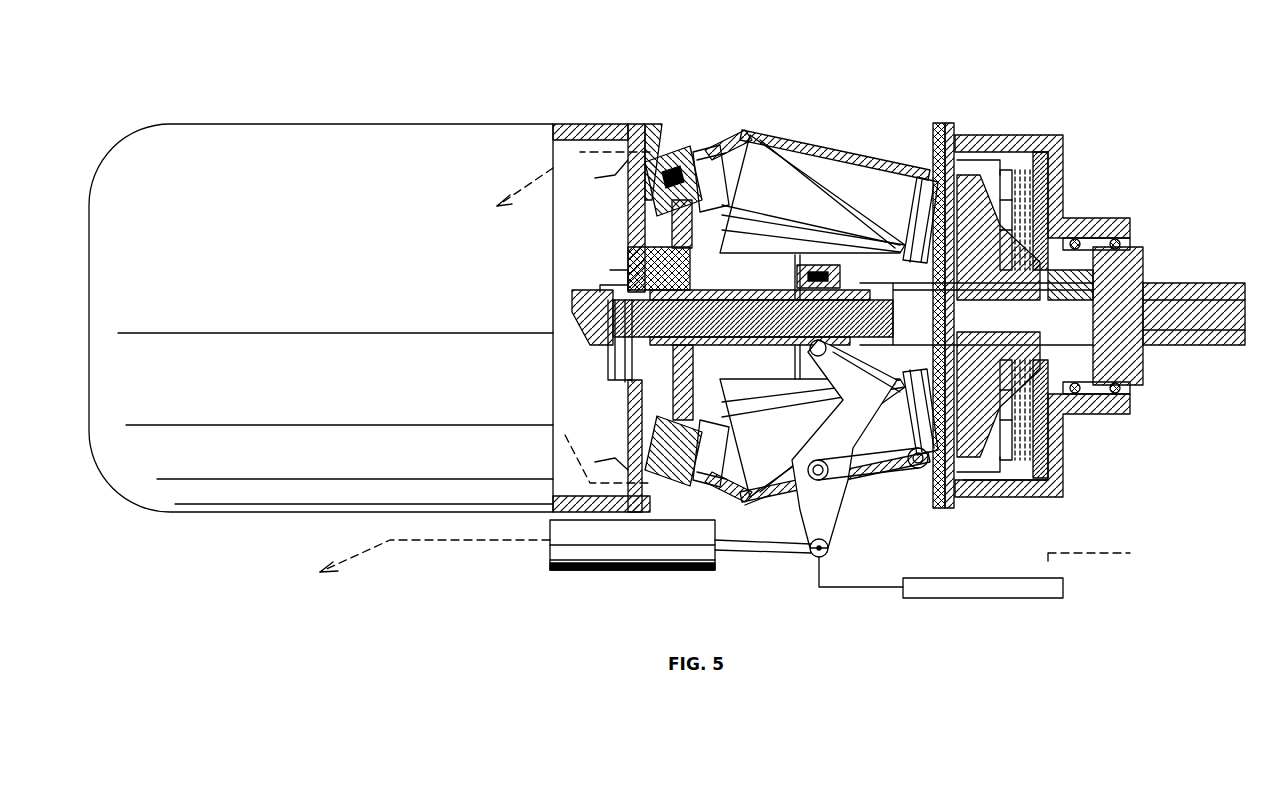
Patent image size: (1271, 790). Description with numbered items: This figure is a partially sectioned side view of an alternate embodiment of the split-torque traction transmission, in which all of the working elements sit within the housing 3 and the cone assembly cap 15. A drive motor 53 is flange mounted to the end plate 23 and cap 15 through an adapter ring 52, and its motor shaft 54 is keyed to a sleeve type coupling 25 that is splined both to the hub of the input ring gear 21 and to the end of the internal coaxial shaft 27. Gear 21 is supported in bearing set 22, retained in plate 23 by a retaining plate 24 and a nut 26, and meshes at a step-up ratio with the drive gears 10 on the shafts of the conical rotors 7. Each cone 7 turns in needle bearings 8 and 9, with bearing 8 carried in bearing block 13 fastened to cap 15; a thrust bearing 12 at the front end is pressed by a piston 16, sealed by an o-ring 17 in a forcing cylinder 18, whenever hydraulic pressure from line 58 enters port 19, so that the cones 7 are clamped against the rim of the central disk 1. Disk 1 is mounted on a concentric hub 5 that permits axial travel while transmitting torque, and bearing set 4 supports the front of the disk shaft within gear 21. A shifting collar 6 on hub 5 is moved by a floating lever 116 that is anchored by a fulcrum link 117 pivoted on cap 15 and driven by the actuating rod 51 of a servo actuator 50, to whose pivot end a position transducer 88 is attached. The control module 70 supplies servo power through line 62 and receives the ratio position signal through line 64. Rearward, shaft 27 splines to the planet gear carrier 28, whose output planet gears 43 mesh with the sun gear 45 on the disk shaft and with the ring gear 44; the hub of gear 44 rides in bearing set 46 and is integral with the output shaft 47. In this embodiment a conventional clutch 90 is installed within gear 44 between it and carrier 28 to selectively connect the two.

The disk 1 is at (790, 345).
The housing 3 is at (998, 135).
The bearing set 4 is at (692, 240).
The hub 5 is at (795, 283).
The shifting collar 6 is at (840, 276).
The conical rotor 7 is at (812, 316).
The bearing 8 is at (711, 316).
The bearing 9 is at (920, 316).
The drive gear 10 is at (692, 160).
The thrust bearing 12 is at (675, 160).
The bearing block 13 is at (738, 132).
The cone assembly cap 15 is at (798, 138).
The piston 16 is at (636, 150).
The o-ring 17 is at (650, 155).
The forcing cylinder 18 is at (665, 205).
The port 19 is at (605, 315).
The input ring gear 21 is at (745, 345).
The bearing set 22 is at (628, 255).
The end plate 23 is at (628, 205).
The retaining plate 24 is at (613, 270).
The sleeve type coupling 25 is at (580, 345).
The nut 26 is at (618, 380).
The internal coaxial shaft 27 is at (725, 290).
The planet gear carrier 28 is at (1048, 460).
The output planet gear 43 is at (933, 160).
The ring gear 44 is at (945, 128).
The sun gear 45 is at (918, 372).
The bearing set 46 is at (1080, 218).
The output shaft 47 is at (1175, 283).
The servo actuator 50 is at (592, 572).
The actuating rod 51 is at (755, 502).
The adapter ring 52 is at (573, 124).
The drive motor 53 is at (372, 124).
The motor shaft 54 is at (600, 290).
The pressure line 58 is at (553, 165).
The servo drive power line 62 is at (430, 542).
The servo position signal line 64 is at (1078, 553).
The module 70 is at (895, 215).
The position transducer 88 is at (940, 578).
The clutch 90 is at (1063, 135).
The floating lever 116 is at (832, 512).
The fulcrum link 117 is at (865, 480).